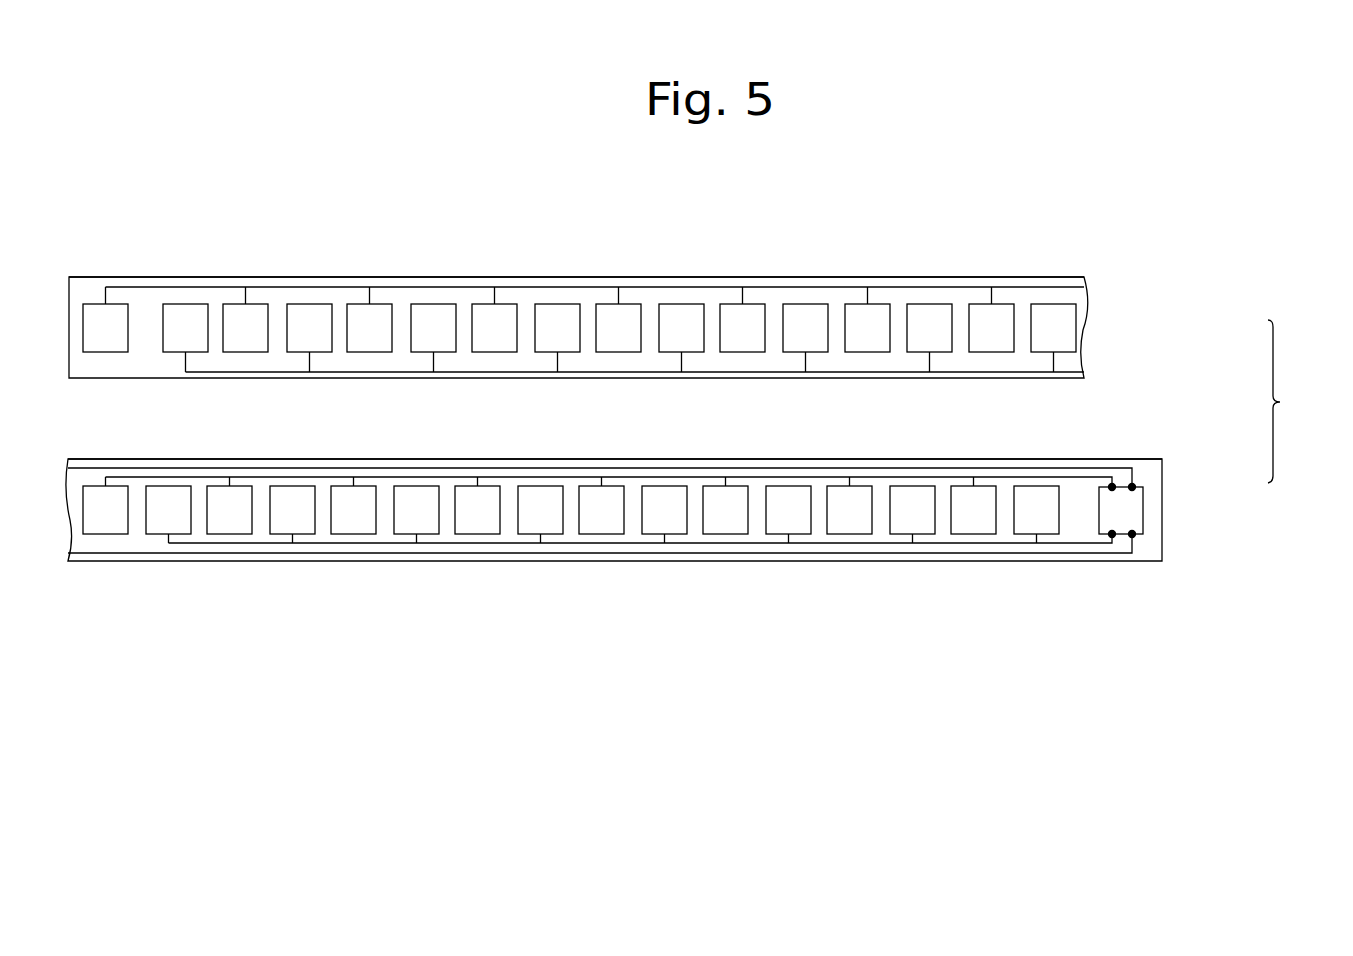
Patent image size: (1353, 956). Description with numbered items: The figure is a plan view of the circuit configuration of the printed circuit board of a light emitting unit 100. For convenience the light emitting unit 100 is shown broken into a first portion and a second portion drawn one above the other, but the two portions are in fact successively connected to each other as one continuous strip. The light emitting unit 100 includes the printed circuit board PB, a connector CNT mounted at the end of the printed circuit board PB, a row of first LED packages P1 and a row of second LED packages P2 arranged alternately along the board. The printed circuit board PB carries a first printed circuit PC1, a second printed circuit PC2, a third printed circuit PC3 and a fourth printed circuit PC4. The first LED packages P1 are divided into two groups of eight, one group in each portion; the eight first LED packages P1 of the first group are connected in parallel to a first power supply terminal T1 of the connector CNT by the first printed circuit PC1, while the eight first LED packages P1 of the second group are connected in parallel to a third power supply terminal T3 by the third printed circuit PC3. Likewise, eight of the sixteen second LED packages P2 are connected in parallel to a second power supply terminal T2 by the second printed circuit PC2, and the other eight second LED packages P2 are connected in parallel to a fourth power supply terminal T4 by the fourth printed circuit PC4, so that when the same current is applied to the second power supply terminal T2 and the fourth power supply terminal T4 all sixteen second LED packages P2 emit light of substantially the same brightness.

The light emitting unit 100 is at (1291, 401).
The printed circuit board PB is at (797, 277).
The first printed circuit PC1 is at (686, 287).
The second printed circuit PC2 is at (615, 372).
The third printed circuit PC3 is at (1007, 468).
The fourth printed circuit PC4 is at (961, 553).
The first LED package P1 is at (548, 419).
The second LED package P2 is at (611, 419).
The connector CNT is at (1143, 509).
The first power supply terminal T1 is at (1132, 487).
The second power supply terminal T2 is at (1132, 534).
The third power supply terminal T3 is at (1112, 487).
The fourth power supply terminal T4 is at (1112, 534).